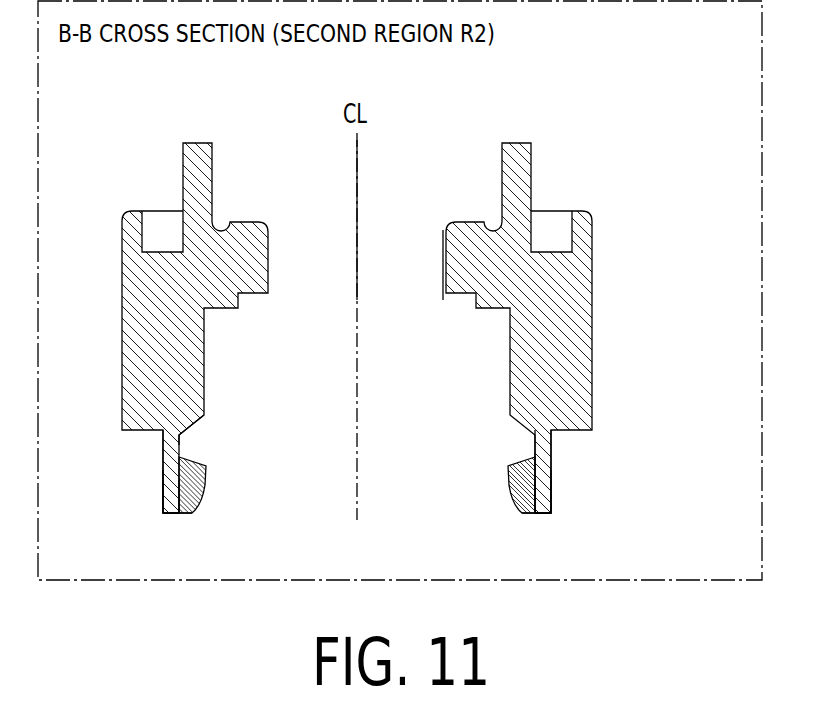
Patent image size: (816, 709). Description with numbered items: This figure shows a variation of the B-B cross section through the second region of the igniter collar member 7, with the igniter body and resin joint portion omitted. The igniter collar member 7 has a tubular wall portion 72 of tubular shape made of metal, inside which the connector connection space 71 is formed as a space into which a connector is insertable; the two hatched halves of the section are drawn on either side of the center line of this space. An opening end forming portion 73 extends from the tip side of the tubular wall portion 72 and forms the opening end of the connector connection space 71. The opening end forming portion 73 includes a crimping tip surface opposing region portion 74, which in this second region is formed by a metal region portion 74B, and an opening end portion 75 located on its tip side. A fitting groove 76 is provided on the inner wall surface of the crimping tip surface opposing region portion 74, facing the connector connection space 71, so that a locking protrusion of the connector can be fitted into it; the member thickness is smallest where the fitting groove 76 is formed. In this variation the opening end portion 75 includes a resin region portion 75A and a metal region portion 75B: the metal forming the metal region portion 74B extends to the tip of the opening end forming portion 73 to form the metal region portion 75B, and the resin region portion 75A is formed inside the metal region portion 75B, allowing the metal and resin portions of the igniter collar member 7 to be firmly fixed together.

The igniter collar member 7 is at (562, 132).
The connector connection space 71 is at (405, 453).
The tubular wall portion 72 is at (572, 301).
The opening end forming portion 73 is at (680, 437).
The crimping tip surface opposing region portion 74 is at (163, 452).
The metal region portion 74B is at (386, 476).
The opening end portion 75 is at (265, 518).
The resin region portion 75A is at (205, 485).
The metal region portion 75B is at (163, 497).
The fitting groove 76 is at (182, 441).